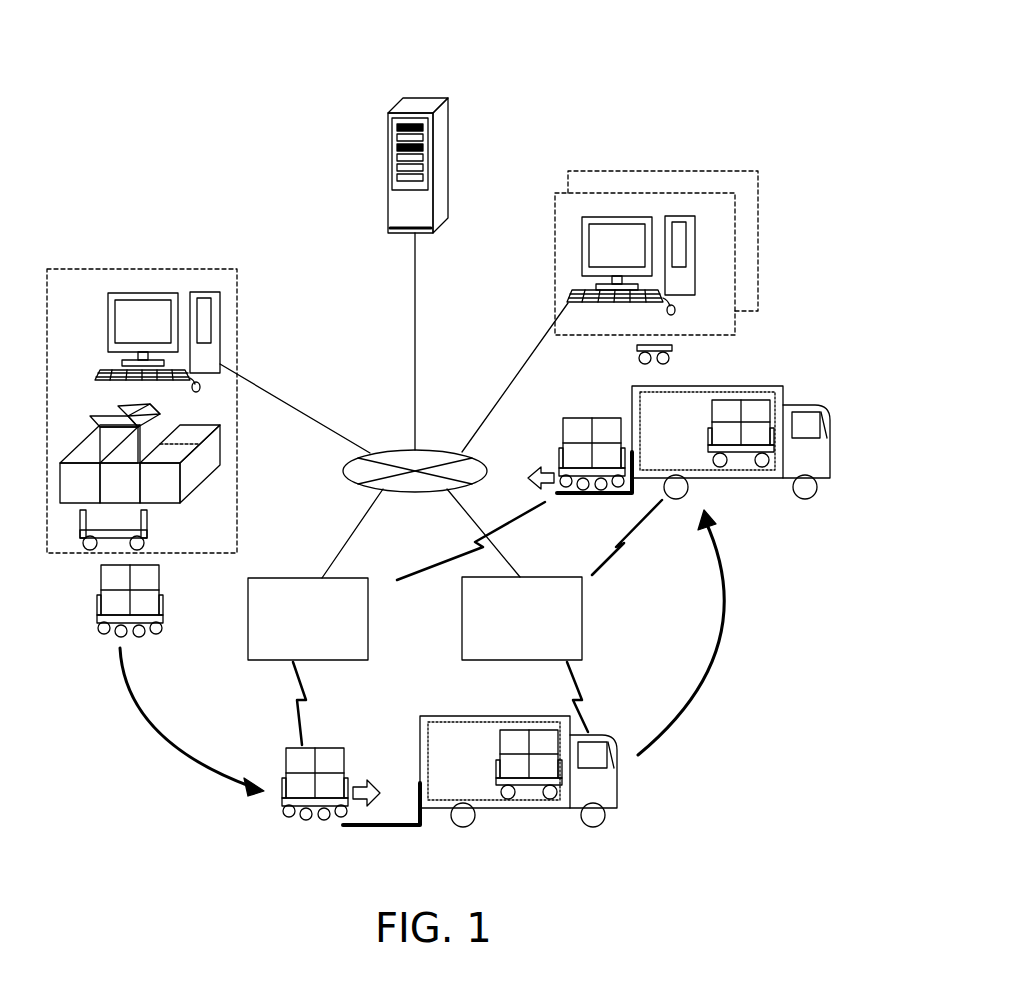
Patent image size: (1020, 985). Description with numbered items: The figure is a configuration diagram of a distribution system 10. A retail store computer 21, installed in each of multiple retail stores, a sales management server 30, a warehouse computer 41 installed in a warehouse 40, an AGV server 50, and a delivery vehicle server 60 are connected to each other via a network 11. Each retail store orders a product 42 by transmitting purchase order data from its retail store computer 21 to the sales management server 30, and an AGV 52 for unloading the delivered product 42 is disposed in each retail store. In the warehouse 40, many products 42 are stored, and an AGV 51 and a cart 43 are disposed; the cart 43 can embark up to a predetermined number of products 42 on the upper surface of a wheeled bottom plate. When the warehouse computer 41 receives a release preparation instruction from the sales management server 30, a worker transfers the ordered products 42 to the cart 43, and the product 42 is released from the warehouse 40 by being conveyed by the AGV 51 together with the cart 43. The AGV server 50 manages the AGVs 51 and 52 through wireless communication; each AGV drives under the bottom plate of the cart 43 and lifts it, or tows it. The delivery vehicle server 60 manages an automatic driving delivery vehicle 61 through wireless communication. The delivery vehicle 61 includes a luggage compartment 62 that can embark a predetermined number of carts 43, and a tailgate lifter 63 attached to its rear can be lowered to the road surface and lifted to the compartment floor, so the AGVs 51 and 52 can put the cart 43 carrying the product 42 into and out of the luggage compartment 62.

The distribution system 10 is at (582, 48).
The network 11 is at (386, 452).
The retail store computer 21 is at (580, 250).
The sales management server 30 is at (386, 125).
The warehouse 40 is at (204, 268).
The warehouse computer 41 is at (160, 292).
The product 42 is at (222, 447).
The cart 43 is at (150, 530).
The AGV server 50 is at (370, 615).
The automated guided vehicle (AGV) 51 is at (142, 638).
The automated guided vehicle (AGV) 52 is at (675, 352).
The delivery vehicle server 60 is at (584, 615).
The delivery vehicle 61 is at (740, 480).
The luggage compartment 62 is at (462, 736).
The tailgate lifter 63 is at (380, 832).